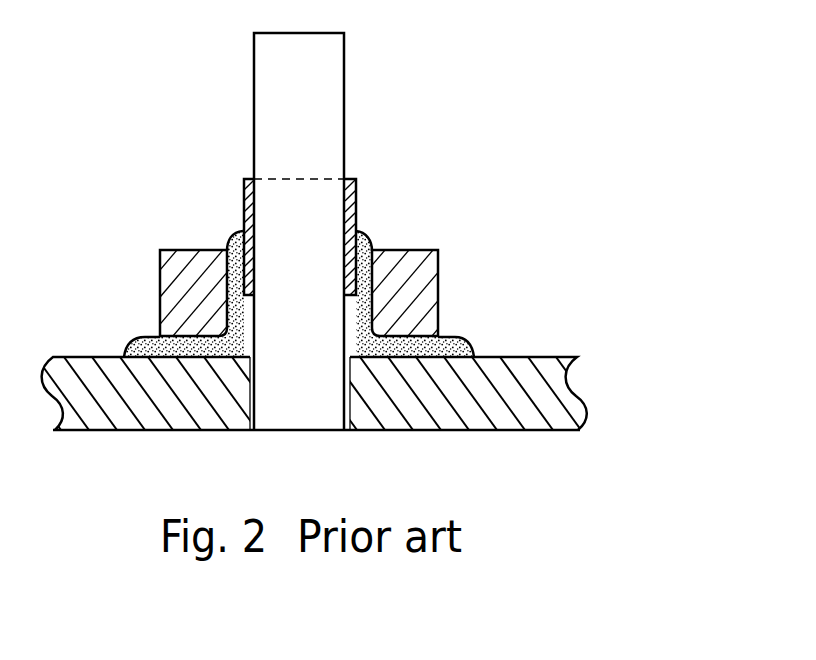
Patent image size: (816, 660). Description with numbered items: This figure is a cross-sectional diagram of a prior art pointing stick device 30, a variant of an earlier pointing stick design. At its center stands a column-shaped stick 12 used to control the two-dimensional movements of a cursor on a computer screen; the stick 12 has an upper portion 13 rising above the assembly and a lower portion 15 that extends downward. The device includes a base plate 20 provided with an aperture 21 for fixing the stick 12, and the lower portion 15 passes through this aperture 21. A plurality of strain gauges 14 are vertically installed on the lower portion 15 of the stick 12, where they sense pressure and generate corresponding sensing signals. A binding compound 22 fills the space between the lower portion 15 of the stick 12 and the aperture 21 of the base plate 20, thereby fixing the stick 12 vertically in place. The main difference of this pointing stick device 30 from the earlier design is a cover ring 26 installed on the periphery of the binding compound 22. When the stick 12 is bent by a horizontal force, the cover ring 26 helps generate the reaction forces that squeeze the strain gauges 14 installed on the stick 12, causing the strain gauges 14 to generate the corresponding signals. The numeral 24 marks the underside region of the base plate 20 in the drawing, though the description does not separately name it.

The pointing stick device 30 is at (121, 58).
The stick 12 is at (356, 231).
The upper portion 13 is at (317, 137).
The lower portion 15 is at (317, 311).
The strain gauges 14 is at (354, 184).
The binding compound 22 is at (366, 238).
The cover ring 26 is at (440, 252).
The base plate 20 is at (308, 399).
The aperture 21 is at (265, 394).
The bottom surface of circuit board 24 is at (511, 443).